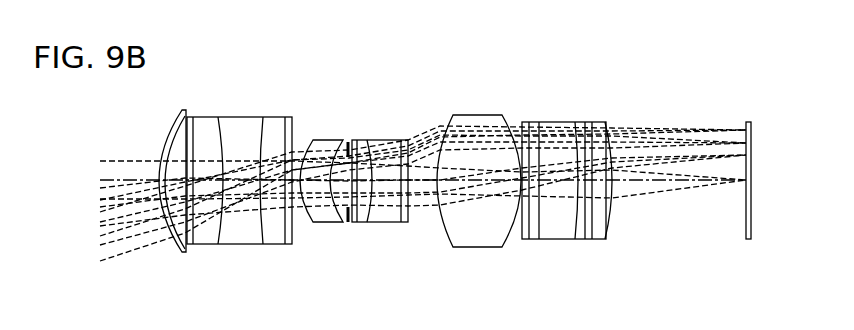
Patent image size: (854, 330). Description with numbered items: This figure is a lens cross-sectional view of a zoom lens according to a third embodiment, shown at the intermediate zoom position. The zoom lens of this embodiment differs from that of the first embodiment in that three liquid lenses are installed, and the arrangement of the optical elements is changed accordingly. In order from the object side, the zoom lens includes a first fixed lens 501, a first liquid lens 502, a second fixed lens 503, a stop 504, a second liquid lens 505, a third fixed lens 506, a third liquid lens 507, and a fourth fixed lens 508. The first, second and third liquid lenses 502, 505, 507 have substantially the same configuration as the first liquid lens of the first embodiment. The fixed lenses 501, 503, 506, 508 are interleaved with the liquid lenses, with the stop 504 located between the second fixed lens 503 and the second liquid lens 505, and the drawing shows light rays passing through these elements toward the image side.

The first fixed lens 501 is at (180, 252).
The first liquid lens 502 is at (242, 246).
The second fixed lens 503 is at (328, 223).
The stop 504 is at (349, 124).
The second liquid lens 505 is at (383, 223).
The third fixed lens 506 is at (475, 248).
The third liquid lens 507 is at (555, 240).
The fourth fixed lens 508 is at (600, 240).